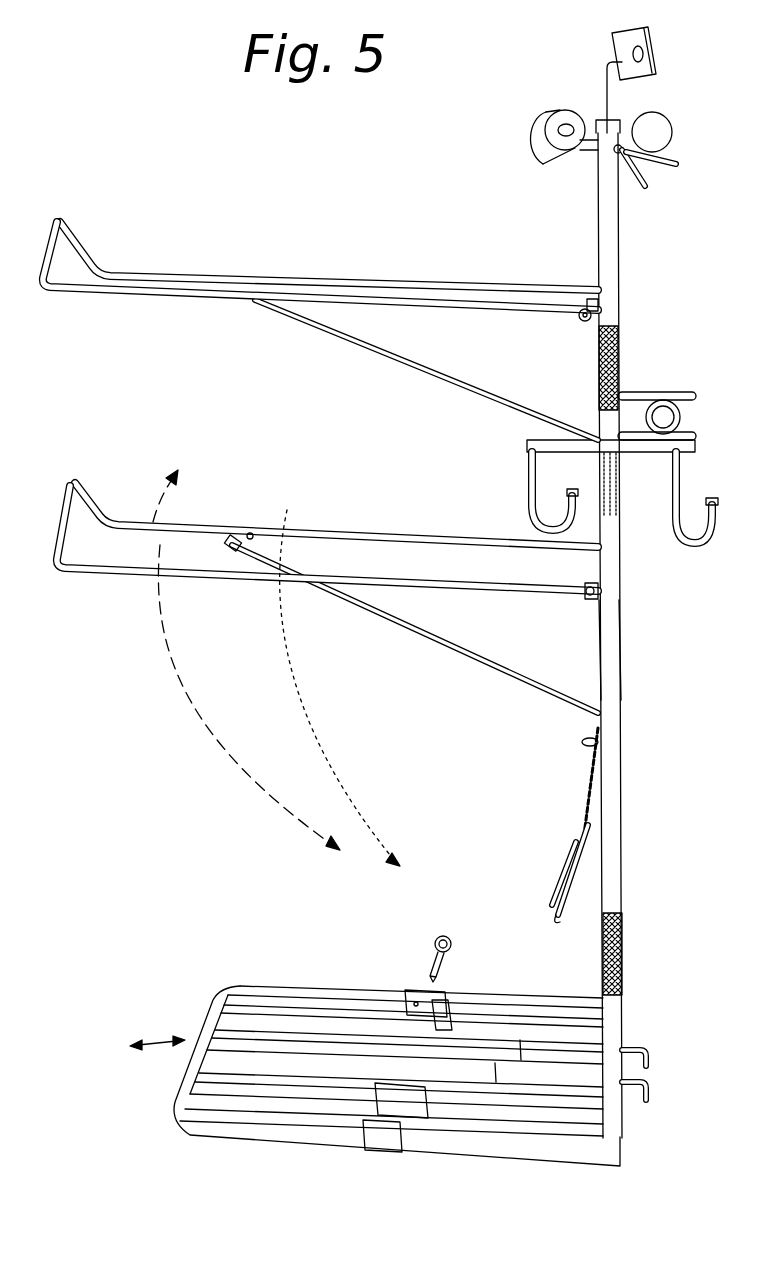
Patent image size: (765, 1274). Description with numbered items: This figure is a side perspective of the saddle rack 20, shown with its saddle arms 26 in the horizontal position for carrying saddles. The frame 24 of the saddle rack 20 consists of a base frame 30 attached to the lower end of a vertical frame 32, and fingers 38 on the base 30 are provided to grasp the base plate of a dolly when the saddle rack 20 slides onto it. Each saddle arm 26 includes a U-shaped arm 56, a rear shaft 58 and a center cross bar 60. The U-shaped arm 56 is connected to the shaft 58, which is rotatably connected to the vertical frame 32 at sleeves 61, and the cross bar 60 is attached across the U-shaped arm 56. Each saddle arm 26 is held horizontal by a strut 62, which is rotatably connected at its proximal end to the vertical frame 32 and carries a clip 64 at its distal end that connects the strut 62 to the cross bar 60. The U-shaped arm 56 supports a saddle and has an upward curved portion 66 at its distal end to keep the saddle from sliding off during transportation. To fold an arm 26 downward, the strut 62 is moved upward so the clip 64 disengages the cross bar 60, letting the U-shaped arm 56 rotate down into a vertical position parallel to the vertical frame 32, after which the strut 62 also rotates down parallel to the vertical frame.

The saddle rack 20 is at (682, 580).
The frame 24 is at (622, 738).
The saddle arms 26 is at (309, 412).
The base frame 30 is at (446, 1160).
The vertical frame 32 is at (612, 645).
The fingers 38 is at (650, 1092).
The U-shaped arm 56 is at (340, 531).
The rear shaft 58 is at (600, 303).
The center cross bar 60 is at (253, 530).
The sleeves 61 is at (600, 592).
The strut 62 is at (426, 634).
The clip 64 is at (220, 547).
The upward curved portion 66 is at (60, 218).